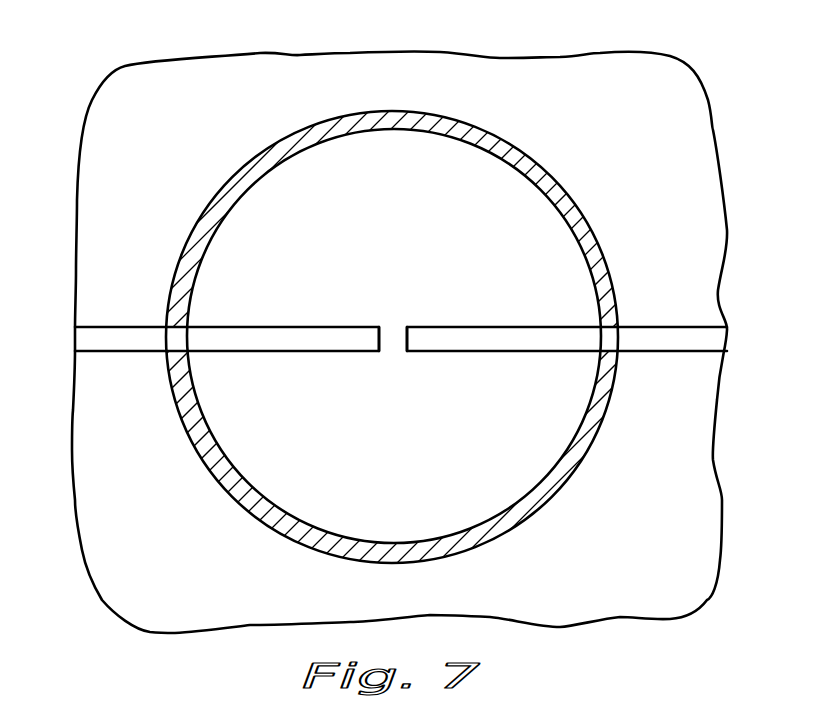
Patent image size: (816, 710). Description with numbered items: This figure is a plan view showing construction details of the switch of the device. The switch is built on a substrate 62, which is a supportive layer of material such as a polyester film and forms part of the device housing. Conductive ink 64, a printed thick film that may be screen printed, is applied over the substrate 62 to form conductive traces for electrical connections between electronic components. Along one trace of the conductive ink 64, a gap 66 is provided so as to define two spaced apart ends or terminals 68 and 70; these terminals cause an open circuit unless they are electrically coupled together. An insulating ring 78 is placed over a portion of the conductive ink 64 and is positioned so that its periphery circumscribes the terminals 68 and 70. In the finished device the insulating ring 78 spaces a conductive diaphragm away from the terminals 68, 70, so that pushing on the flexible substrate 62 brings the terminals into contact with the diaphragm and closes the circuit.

The substrate 62 is at (140, 592).
The conductive ink 64 is at (396, 315).
The gap 66 is at (415, 318).
The terminal 68 is at (300, 326).
The terminal 70 is at (485, 326).
The insulating ring 78 is at (190, 258).